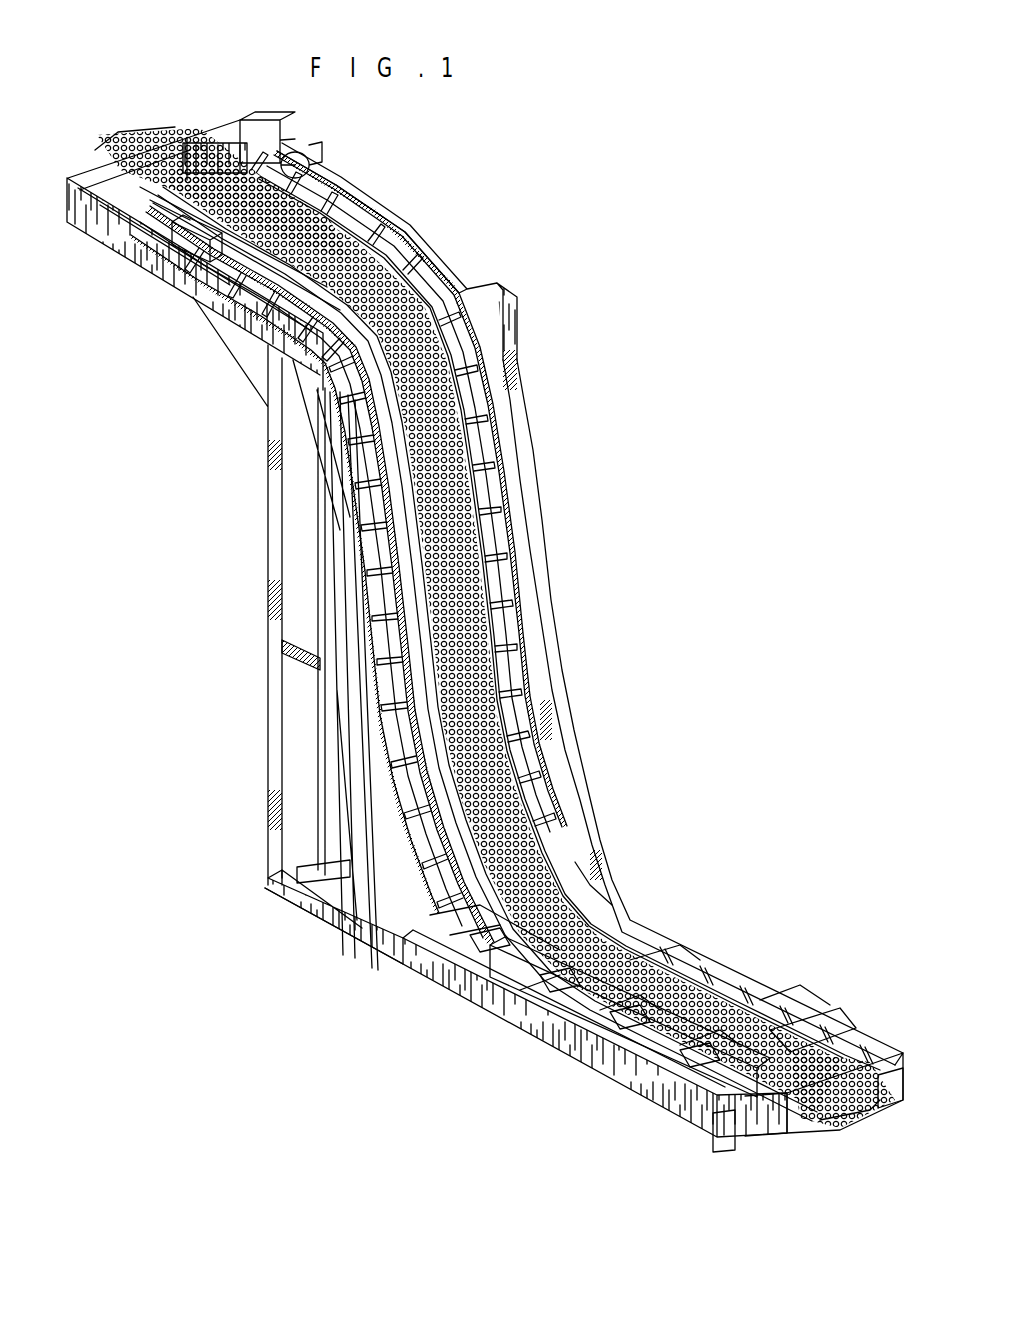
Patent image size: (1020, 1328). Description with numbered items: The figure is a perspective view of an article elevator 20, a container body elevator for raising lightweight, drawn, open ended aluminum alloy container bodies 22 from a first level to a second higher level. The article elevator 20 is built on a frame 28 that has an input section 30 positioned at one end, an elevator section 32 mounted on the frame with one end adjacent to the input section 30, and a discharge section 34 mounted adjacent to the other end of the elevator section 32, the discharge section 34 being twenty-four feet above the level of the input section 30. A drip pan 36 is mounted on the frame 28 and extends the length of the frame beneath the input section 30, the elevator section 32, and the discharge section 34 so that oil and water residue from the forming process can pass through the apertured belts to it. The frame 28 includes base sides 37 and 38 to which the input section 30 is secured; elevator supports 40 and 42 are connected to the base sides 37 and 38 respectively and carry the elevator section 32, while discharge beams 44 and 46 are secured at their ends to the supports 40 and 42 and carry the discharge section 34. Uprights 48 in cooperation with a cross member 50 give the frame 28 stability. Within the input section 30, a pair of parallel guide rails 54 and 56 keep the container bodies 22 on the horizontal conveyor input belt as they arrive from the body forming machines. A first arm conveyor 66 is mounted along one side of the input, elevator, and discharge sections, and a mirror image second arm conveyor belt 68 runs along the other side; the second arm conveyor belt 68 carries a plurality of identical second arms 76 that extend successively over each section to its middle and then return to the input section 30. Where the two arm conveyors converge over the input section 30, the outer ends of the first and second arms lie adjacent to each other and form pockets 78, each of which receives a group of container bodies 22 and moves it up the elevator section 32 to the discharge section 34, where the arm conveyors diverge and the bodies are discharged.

The article elevator 20 is at (516, 630).
The container body 22 is at (867, 1123).
The frame 28 is at (287, 633).
The input section 30 is at (584, 1049).
The elevator section 32 is at (517, 552).
The discharge section 34 is at (213, 260).
The drip pan 36 is at (767, 1115).
The base side 37 is at (706, 1152).
The base side 38 is at (897, 1103).
The elevator support 40 is at (343, 715).
The elevator support 42 is at (555, 620).
The discharge beam 44 is at (150, 258).
The discharge beam 46 is at (457, 267).
The upright 48 is at (268, 577).
The cross member 50 is at (282, 632).
The guide rail 54 is at (720, 1096).
The guide rail 56 is at (797, 1053).
The first arm conveyor 66 is at (400, 440).
The second arm conveyor belt 68 is at (547, 740).
The second arm 76 is at (600, 905).
The pocket 78 is at (552, 813).